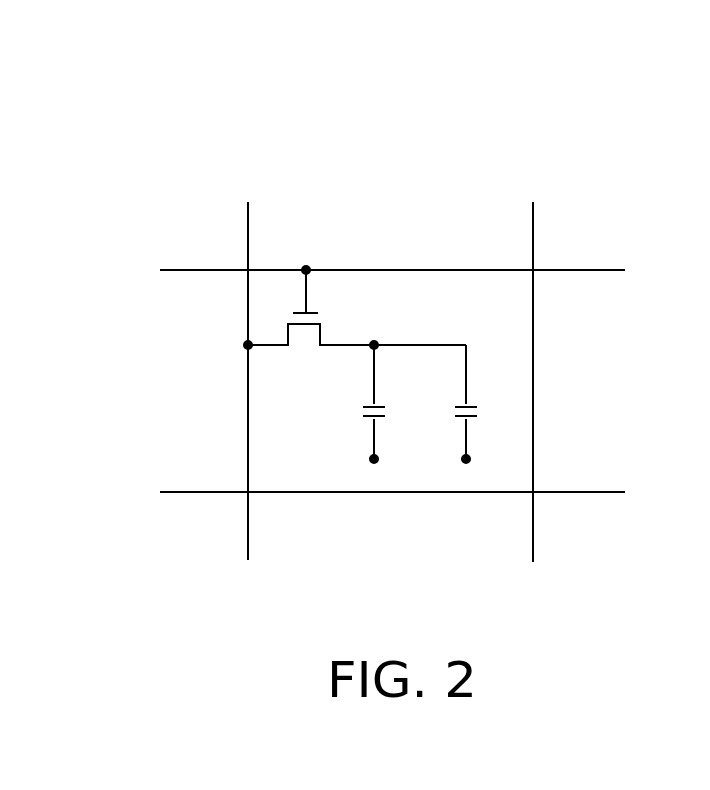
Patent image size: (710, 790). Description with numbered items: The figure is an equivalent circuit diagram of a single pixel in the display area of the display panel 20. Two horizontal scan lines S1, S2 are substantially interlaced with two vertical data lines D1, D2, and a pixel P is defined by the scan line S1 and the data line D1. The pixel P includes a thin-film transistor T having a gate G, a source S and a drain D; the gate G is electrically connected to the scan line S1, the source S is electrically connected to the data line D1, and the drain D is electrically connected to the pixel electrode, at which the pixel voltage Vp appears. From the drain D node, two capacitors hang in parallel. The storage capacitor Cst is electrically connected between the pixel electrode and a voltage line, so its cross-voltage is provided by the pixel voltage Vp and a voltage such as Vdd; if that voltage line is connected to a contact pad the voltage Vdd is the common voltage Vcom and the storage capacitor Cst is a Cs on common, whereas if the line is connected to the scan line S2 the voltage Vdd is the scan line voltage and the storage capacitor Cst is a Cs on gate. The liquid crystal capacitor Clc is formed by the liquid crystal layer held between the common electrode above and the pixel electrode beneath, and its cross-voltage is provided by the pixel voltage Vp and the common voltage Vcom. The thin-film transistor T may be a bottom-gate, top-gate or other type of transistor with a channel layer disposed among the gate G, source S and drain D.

The display panel 20 is at (100, 61).
The scan line S1 is at (373, 270).
The scan line S2 is at (373, 492).
The data line D1 is at (250, 363).
The data line D2 is at (536, 364).
The thin-film transistor T is at (332, 303).
The gate G is at (300, 289).
The source S is at (276, 331).
The drain D is at (339, 331).
The pixel P is at (445, 303).
The pixel voltage Vp is at (431, 332).
The storage capacitor Cst is at (394, 402).
The liquid crystal capacitor Clc is at (485, 402).
The voltage Vdd is at (377, 474).
The common voltage Vcom is at (477, 474).